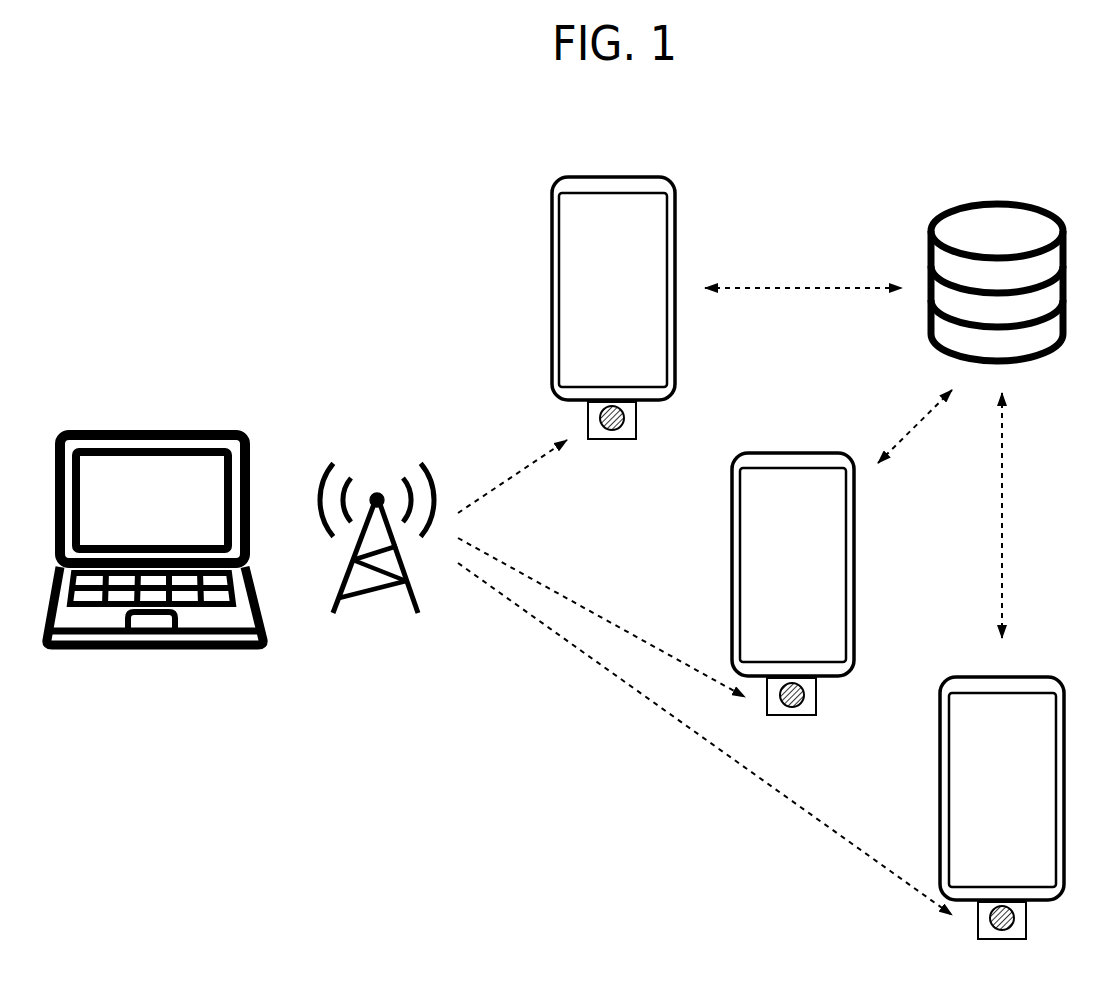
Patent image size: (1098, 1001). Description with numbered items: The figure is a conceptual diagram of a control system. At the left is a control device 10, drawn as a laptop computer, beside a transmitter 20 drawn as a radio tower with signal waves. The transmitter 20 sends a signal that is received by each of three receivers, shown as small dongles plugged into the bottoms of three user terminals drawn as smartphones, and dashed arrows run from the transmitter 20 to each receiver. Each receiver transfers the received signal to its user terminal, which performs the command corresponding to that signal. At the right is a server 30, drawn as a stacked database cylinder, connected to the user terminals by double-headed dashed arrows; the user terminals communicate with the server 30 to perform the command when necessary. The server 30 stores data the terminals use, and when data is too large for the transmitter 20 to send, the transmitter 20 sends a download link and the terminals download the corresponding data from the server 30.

The control device 10 is at (152, 431).
The transmitter 20 is at (369, 465).
The server 30 is at (929, 238).